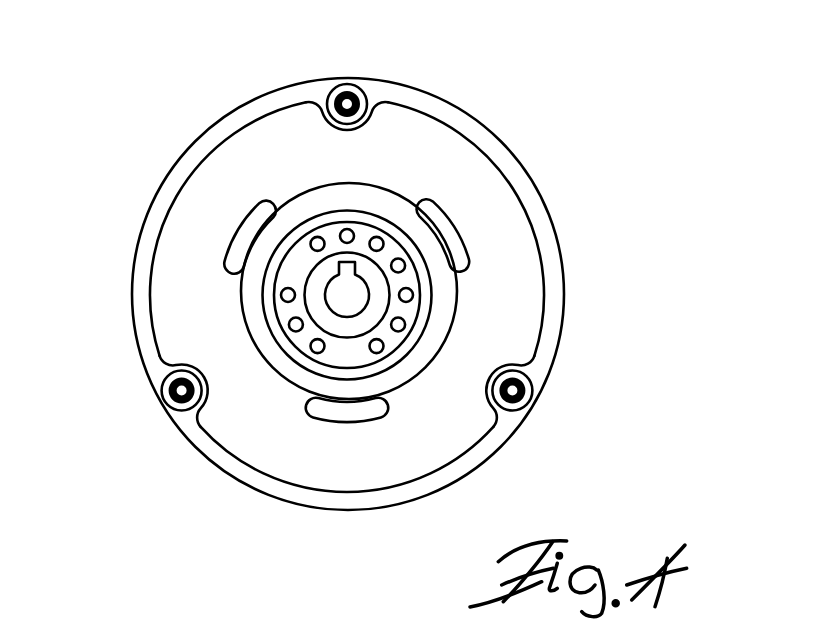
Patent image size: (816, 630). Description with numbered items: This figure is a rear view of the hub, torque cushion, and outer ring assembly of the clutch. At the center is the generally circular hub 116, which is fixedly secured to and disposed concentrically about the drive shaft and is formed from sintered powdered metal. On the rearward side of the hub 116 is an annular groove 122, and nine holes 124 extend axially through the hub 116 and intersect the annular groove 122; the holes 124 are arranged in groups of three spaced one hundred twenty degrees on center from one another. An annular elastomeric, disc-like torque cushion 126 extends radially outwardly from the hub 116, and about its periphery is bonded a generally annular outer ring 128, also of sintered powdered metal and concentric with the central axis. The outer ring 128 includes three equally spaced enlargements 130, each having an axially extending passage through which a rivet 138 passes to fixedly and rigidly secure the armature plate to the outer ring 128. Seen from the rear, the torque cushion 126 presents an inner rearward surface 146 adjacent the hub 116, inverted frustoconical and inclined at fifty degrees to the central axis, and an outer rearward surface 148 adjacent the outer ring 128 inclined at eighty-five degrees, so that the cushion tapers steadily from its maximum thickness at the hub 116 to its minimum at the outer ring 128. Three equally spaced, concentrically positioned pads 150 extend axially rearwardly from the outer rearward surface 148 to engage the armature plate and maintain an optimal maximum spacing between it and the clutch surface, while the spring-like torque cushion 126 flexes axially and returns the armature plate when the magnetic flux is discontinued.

The hub 116 is at (272, 291).
The annular groove 122 is at (408, 266).
The holes 124 is at (338, 234).
The torque cushion 126 is at (476, 127).
The outer ring 128 is at (535, 193).
The enlargements 130 is at (366, 124).
The rivets 138 is at (347, 102).
The inner rearward surface 146 is at (296, 378).
The outer rearward surface 148 is at (326, 476).
The pads 150 is at (263, 207).